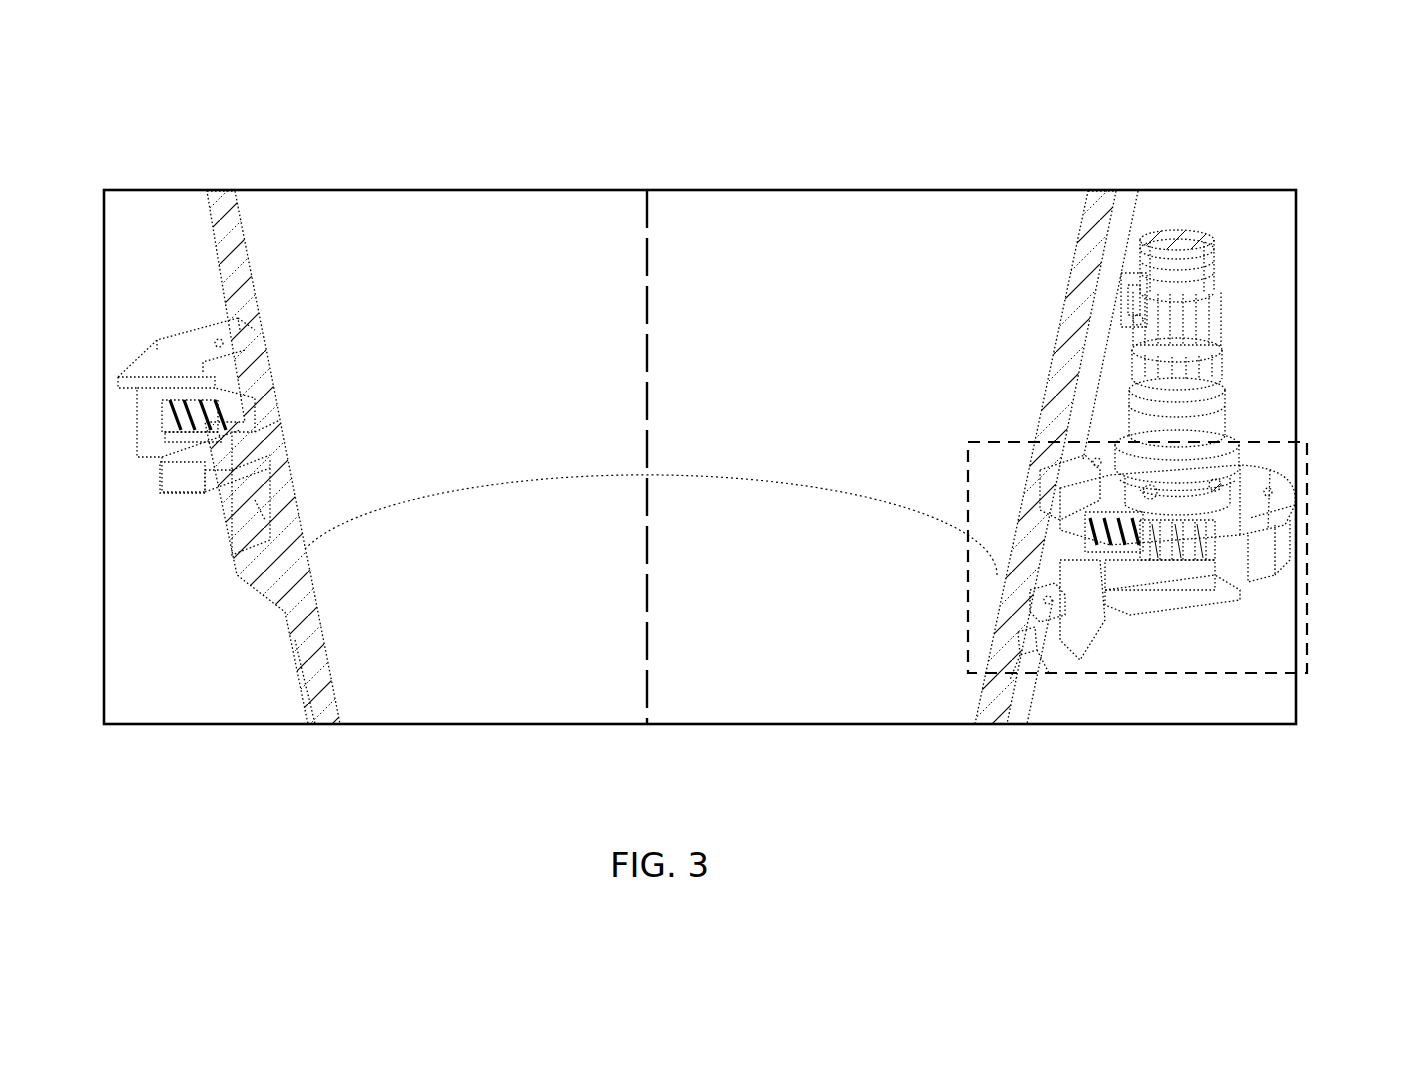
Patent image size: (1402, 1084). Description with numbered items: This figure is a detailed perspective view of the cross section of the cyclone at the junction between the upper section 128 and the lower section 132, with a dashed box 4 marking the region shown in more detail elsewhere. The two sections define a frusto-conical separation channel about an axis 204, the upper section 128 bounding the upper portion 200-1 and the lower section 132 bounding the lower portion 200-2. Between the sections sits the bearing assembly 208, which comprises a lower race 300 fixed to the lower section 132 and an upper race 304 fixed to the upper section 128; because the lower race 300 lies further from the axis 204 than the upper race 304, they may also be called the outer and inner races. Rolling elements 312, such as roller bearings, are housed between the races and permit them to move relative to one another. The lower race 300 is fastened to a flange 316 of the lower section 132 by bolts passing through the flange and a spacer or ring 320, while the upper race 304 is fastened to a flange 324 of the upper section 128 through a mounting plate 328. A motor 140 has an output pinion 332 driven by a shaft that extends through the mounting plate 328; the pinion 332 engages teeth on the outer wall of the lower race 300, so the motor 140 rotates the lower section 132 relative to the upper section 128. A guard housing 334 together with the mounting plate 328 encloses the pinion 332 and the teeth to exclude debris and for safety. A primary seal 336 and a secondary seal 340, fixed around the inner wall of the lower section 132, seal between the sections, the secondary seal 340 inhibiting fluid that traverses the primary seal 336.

The upper section 128 is at (216, 220).
The lower section 132 is at (310, 672).
The motor 140 is at (1177, 233).
The axis 204 is at (647, 270).
The upper portion of the channel 200-1 is at (336, 288).
The lower portion of the channel 200-2 is at (382, 660).
The bearing assembly 208 is at (172, 388).
The lower race 300 is at (164, 422).
The upper race 304 is at (188, 435).
The rolling elements 312 is at (190, 422).
The flange 316 is at (208, 494).
The spacer or ring 320 is at (190, 457).
The flange 324 is at (1083, 467).
The mounting plate 328 is at (1262, 485).
The output pinion 332 is at (1205, 555).
The guard housing 334 is at (1218, 597).
The primary seal 336 is at (1025, 640).
The secondary seal 340 is at (1042, 590).
The detail view region of FIG. 4 is at (1113, 673).